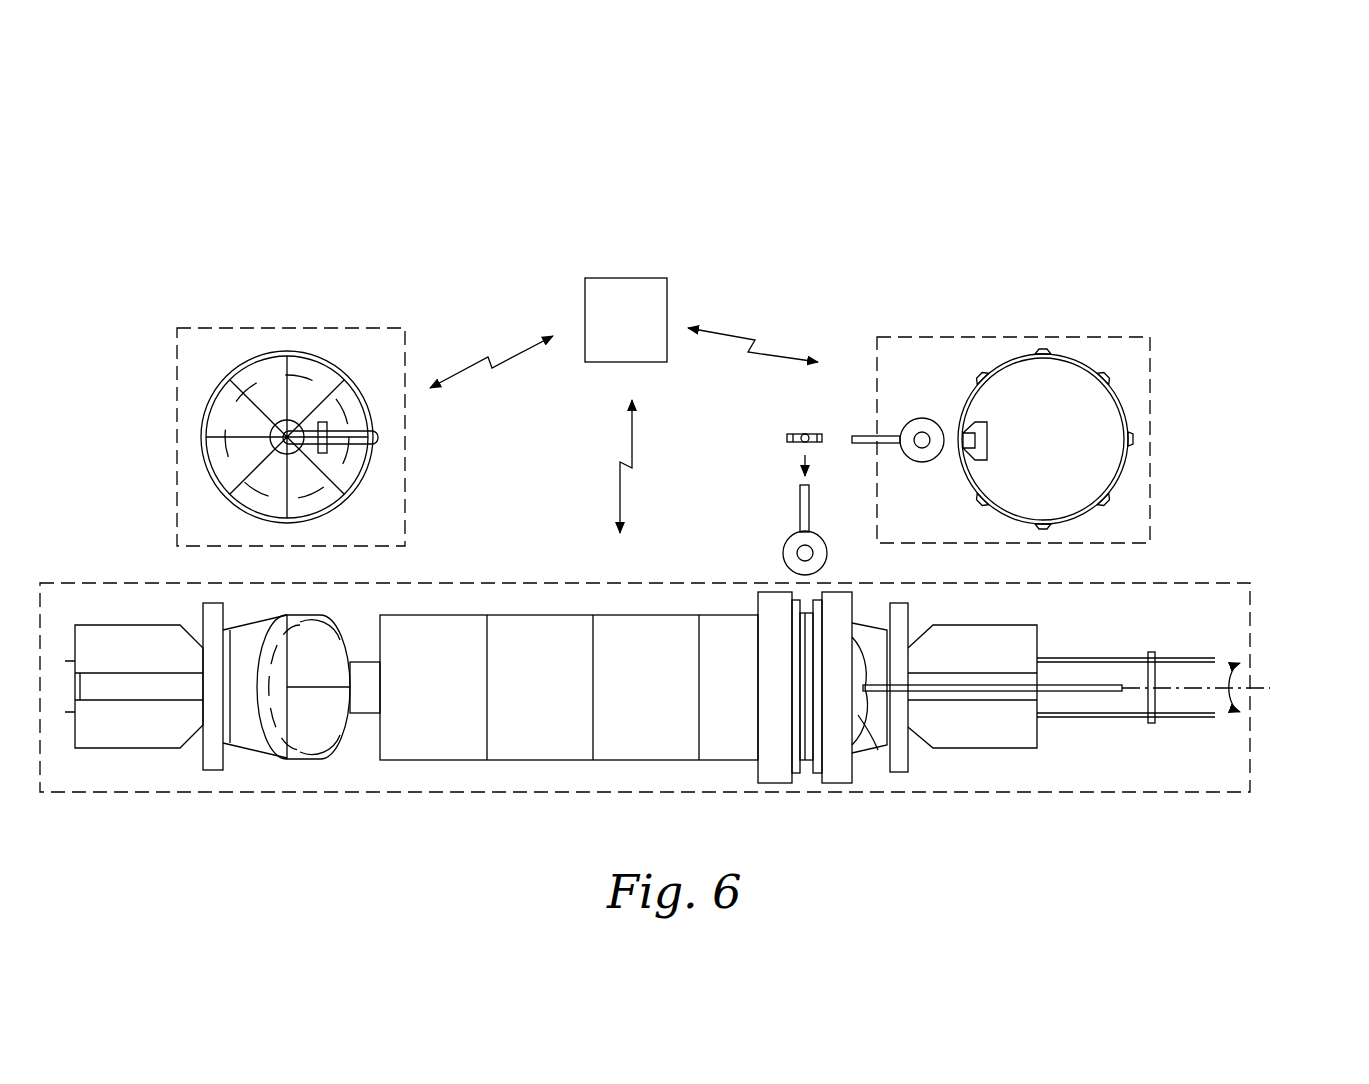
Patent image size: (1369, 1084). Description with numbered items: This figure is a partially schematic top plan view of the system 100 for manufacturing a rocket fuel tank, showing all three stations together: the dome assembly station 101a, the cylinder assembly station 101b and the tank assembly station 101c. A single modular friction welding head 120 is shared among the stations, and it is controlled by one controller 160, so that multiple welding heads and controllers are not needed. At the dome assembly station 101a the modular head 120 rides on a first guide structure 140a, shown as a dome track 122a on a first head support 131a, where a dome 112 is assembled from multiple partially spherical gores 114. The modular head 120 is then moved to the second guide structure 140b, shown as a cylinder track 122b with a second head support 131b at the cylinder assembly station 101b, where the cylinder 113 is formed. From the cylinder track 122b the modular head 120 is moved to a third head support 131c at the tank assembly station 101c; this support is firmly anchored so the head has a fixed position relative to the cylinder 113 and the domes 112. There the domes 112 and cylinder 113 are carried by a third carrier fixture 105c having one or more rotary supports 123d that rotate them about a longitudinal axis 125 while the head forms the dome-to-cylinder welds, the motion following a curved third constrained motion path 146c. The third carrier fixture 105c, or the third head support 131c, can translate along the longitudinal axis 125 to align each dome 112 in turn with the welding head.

The system 100 is at (770, 172).
The dome assembly station 101a is at (175, 436).
The cylinder assembly station 101b is at (1152, 486).
The tank assembly station 101c is at (1253, 765).
The third carrier fixture 105c is at (930, 770).
The dome 112 is at (252, 370).
The cylinder 113 is at (1122, 406).
The gore 114 is at (312, 372).
The modular friction welding head 120 is at (332, 420).
The dome track 122a is at (378, 438).
The cylinder track 122b is at (940, 428).
The rotary support 123d is at (122, 748).
The longitudinal axis 125 is at (1265, 686).
The first head support 131a is at (355, 478).
The second head support 131b is at (862, 392).
The third head support 131c is at (775, 533).
The first guide structure 140a is at (388, 466).
The second guide structure 140b is at (897, 418).
The third constrained motion path 146c is at (1238, 660).
The controller 160 is at (650, 278).